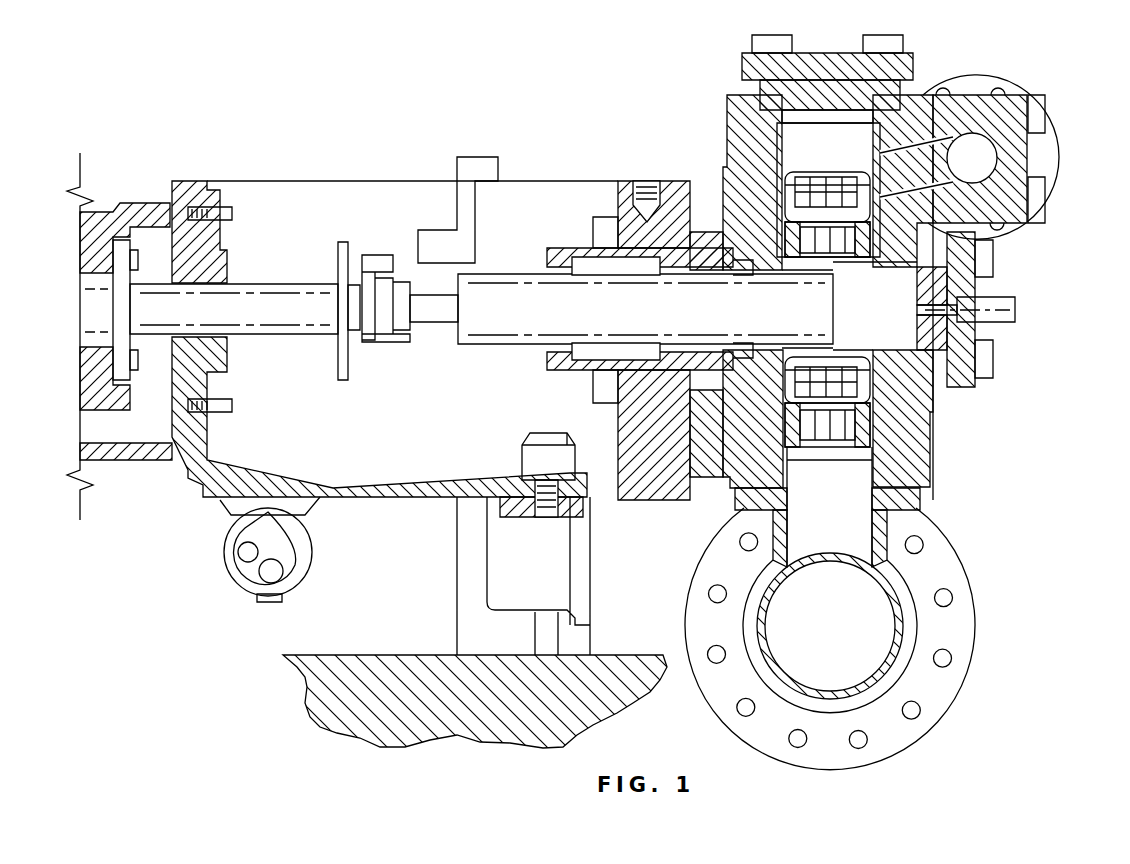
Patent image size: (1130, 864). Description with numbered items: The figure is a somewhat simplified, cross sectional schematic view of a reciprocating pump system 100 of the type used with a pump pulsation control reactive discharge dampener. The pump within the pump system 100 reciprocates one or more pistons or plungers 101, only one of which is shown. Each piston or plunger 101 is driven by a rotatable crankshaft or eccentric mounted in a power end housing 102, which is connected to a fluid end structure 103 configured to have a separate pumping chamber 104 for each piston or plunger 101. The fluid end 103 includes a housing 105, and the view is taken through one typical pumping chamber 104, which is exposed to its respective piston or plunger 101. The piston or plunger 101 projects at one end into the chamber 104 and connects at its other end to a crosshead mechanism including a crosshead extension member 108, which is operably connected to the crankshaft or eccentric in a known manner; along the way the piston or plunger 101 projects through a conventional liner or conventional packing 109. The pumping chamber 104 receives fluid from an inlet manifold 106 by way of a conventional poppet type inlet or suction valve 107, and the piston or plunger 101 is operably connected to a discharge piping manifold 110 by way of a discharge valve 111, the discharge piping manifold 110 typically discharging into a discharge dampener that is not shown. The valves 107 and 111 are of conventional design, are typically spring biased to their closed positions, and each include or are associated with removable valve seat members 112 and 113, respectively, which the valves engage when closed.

The pump system 100 is at (384, 90).
The piston or plunger 101 is at (492, 347).
The power end housing 102 is at (192, 473).
The fluid end structure 103 is at (930, 460).
The pumping chamber 104 is at (892, 322).
The housing 105 is at (717, 480).
The inlet manifold 106 is at (905, 612).
The inlet or suction valve 107 is at (845, 400).
The crosshead extension member 108 is at (290, 340).
The packing 109 is at (580, 252).
The discharge piping manifold 110 is at (1058, 145).
The discharge valve 111 is at (833, 174).
The valve seat member 112 is at (873, 442).
The valve seat member 113 is at (792, 278).